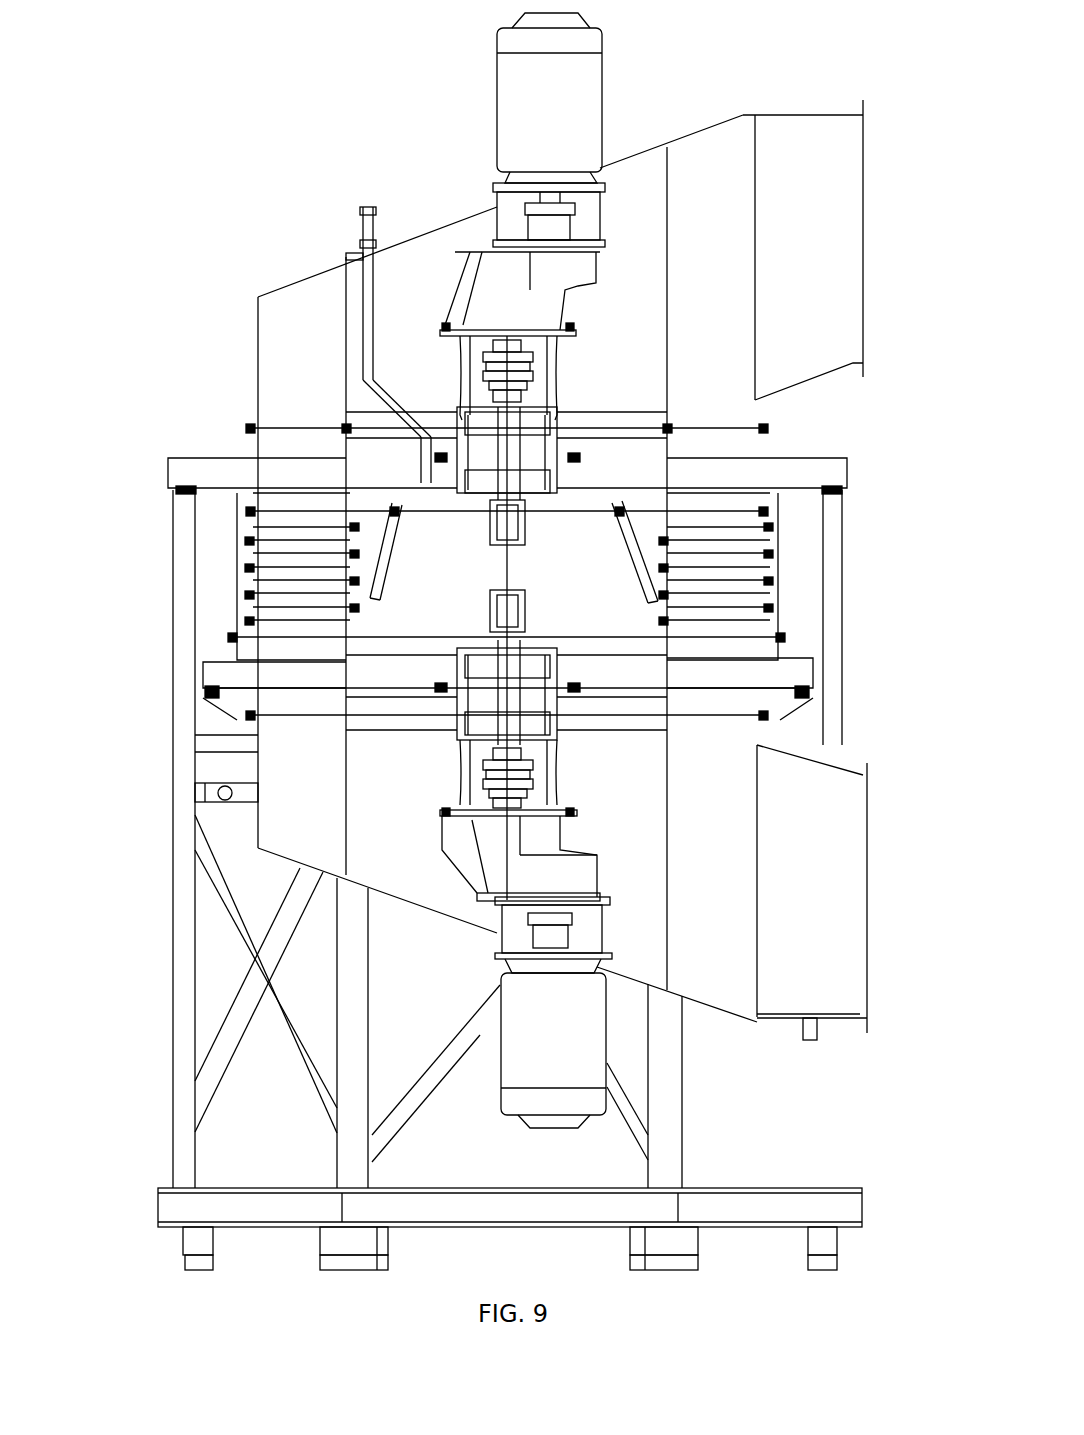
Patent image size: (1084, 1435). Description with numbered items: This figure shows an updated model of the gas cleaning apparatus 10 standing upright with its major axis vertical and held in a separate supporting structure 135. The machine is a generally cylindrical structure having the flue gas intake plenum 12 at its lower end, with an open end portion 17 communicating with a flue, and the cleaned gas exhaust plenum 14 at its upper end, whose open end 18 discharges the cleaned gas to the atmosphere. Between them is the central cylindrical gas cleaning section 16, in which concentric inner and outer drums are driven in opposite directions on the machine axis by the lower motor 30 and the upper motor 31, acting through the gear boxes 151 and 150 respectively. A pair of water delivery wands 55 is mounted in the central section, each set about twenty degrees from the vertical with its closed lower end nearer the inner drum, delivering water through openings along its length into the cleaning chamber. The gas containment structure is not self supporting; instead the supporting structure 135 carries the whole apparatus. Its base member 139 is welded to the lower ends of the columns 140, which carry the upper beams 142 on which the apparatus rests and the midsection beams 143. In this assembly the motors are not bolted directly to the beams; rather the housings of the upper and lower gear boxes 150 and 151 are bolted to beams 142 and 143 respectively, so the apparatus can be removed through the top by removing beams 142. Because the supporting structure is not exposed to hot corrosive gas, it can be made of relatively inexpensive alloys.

The apparatus 10 is at (233, 302).
The flue gas intake plenum 12 is at (440, 915).
The cleaned gas exhaust plenum 14 is at (445, 223).
The central cylindrical gas cleaning section 16 is at (783, 586).
The open end portion 17 is at (868, 840).
The open end 18 is at (868, 181).
The motor 30 is at (499, 1108).
The motor 31 is at (502, 99).
The water delivery wand 55 is at (380, 590).
The supporting structure 135 is at (170, 993).
The base member 139 is at (165, 1200).
The columns 140 is at (846, 672).
The beams 142 is at (190, 470).
The midsection beams 143 is at (203, 680).
The gear box 150 is at (570, 297).
The gear box 151 is at (568, 852).